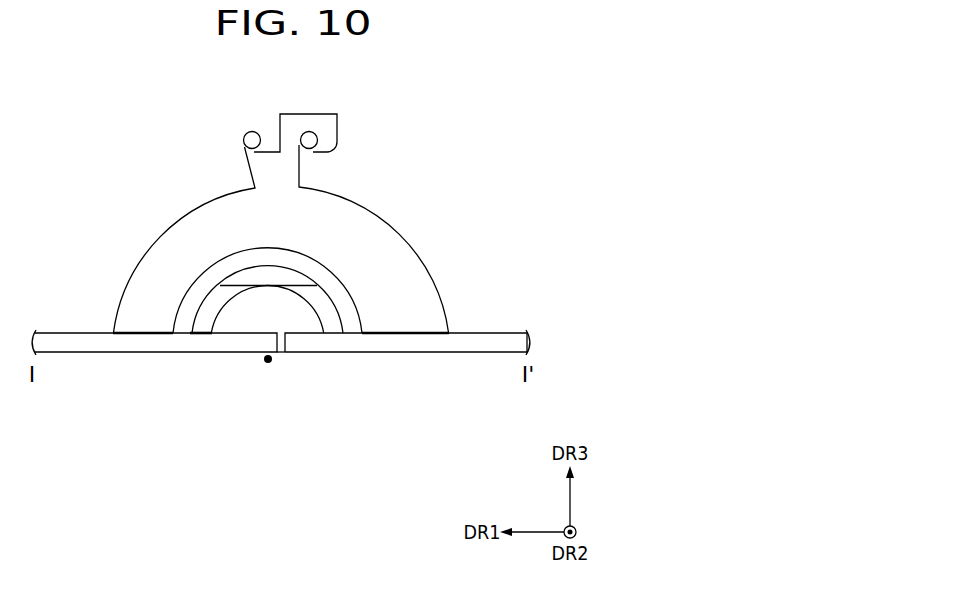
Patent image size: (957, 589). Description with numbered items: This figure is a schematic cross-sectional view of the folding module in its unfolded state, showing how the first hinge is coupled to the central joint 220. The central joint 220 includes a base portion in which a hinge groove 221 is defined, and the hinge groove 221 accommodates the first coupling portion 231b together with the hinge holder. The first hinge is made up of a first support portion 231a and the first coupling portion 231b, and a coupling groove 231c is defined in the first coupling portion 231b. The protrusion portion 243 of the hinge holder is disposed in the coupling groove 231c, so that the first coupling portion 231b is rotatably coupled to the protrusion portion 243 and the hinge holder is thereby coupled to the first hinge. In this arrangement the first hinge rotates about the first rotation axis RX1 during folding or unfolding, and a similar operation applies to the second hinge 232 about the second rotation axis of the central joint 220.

The central joint 220 is at (428, 297).
The hinge groove 221 is at (350, 310).
The protrusion portion 243 is at (258, 274).
The coupling groove 231c is at (210, 308).
The first coupling portion 231b is at (327, 280).
The first support portion 231a is at (128, 343).
The second hinge 232 is at (435, 343).
The first rotation axis RX1 is at (268, 372).